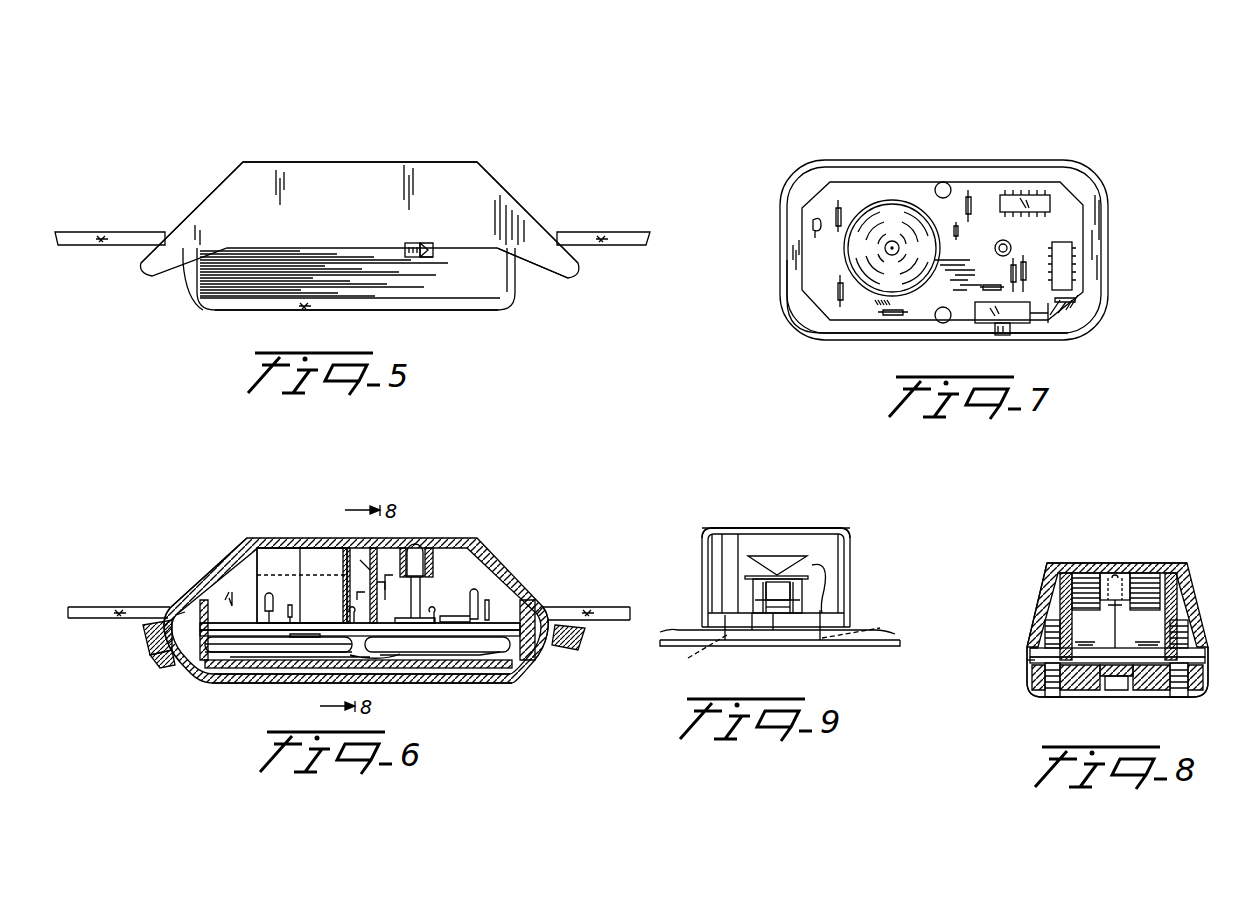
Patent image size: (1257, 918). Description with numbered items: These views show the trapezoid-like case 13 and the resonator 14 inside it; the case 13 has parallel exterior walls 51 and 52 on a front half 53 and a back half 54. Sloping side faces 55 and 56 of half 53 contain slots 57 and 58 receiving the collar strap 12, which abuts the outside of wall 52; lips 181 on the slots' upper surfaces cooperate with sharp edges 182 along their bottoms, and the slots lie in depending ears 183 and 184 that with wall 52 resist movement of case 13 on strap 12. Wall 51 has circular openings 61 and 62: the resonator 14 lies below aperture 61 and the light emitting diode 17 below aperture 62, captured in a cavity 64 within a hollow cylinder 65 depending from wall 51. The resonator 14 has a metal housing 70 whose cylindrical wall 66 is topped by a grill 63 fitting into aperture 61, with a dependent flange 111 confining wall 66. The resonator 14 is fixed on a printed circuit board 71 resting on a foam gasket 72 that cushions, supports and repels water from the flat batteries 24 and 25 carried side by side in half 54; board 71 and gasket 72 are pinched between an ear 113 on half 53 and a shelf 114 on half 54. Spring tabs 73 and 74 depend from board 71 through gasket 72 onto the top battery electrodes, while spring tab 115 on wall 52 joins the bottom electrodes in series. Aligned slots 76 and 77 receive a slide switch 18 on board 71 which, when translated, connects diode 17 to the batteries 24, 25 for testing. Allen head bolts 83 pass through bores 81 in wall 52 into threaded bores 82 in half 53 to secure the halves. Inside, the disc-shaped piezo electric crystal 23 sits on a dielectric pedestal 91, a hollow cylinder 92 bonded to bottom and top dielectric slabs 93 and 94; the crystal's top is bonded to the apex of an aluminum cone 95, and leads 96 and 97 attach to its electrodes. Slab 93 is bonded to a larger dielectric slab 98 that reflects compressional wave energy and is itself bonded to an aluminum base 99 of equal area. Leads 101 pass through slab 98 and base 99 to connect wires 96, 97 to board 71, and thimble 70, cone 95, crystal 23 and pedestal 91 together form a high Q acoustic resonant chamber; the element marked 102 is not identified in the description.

In FIG. 5, the collar strap 12 is at (640, 232).
In FIG. 6, the collar strap 12 is at (90, 612).
In FIG. 5, the case 13 is at (359, 195).
In FIG. 6, the case 13 is at (367, 594).
In FIG. 8, the case 13 is at (1117, 566).
In FIG. 7, the resonator 14 is at (962, 218).
In FIG. 6, the resonator 14 is at (291, 553).
In FIG. 9, the resonator 14 is at (753, 477).
In FIG. 7, the light emitting diode 17 is at (1000, 240).
In FIG. 6, the light emitting diode 17 is at (418, 560).
In FIG. 8, the light emitting diode 17 is at (1110, 582).
In FIG. 5, the slide switch 18 is at (405, 245).
In FIG. 7, the slide switch 18 is at (1012, 333).
In FIG. 9, the piezo electric crystal 23 is at (738, 580).
In FIG. 6, the battery 24 is at (250, 645).
In FIG. 6, the battery 25 is at (520, 664).
In FIG. 5, the exterior wall 51 is at (420, 162).
In FIG. 8, the exterior wall 51 is at (1182, 563).
In FIG. 5, the exterior wall 52 is at (485, 285).
In FIG. 7, the exterior wall 52 is at (1108, 237).
In FIG. 6, the exterior wall 52 is at (485, 662).
In FIG. 8, the exterior wall 52 is at (1095, 698).
In FIG. 5, the front half 53 is at (527, 197).
In FIG. 6, the front half 53 is at (189, 558).
In FIG. 8, the front half 53 is at (1025, 574).
In FIG. 5, the back half 54 is at (333, 341).
In FIG. 6, the back half 54 is at (384, 714).
In FIG. 8, the back half 54 is at (1087, 730).
In FIG. 5, the sloping side face 55 is at (210, 193).
In FIG. 5, the sloping side face 56 is at (535, 215).
In FIG. 6, the slot 57 is at (150, 630).
In FIG. 6, the slot 58 is at (578, 622).
In FIG. 6, the circular opening 61 is at (303, 538).
In FIG. 6, the circular opening 62 is at (412, 548).
In FIG. 7, the grill 63 is at (870, 205).
In FIG. 9, the grill 63 is at (825, 528).
In FIG. 6, the cavity 64 is at (435, 548).
In FIG. 6, the hollow cylinder 65 is at (395, 578).
In FIG. 8, the hollow cylinder 65 is at (1098, 588).
In FIG. 6, the cylindrical wall 66 is at (345, 555).
In FIG. 9, the cylindrical wall 66 is at (705, 606).
In FIG. 6, the thimble-like metal housing 70 is at (262, 598).
In FIG. 9, the thimble-like metal housing 70 is at (738, 573).
In FIG. 7, the printed circuit board 71 is at (810, 268).
In FIG. 6, the printed circuit board 71 is at (225, 631).
In FIG. 9, the printed circuit board 71 is at (690, 636).
In FIG. 8, the printed circuit board 71 is at (1205, 648).
In FIG. 7, the closed cell foam gasket 72 is at (800, 195).
In FIG. 6, the closed cell foam gasket 72 is at (300, 637).
In FIG. 9, the closed cell foam gasket 72 is at (875, 648).
In FIG. 8, the closed cell foam gasket 72 is at (1190, 660).
In FIG. 6, the terminal spring tab 73 is at (410, 655).
In FIG. 6, the terminal spring tab 74 is at (345, 640).
In FIG. 5, the slot 76 is at (433, 245).
In FIG. 5, the slot 77 is at (430, 258).
In FIG. 7, the slot 77 is at (1000, 335).
In FIG. 8, the circular bore 81 is at (1038, 682).
In FIG. 8, the threaded bore 82 is at (1042, 638).
In FIG. 8, the Allen head bolt 83 is at (1182, 695).
In FIG. 9, the dielectric pedestal 91 is at (845, 602).
In FIG. 9, the hollow cylinder 92 is at (740, 600).
In FIG. 9, the bottom dielectric slab 93 is at (783, 609).
In FIG. 9, the top dielectric slab 94 is at (805, 590).
In FIG. 9, the aluminum cone 95 is at (777, 560).
In FIG. 9, the lead 96 is at (768, 592).
In FIG. 9, the lead 97 is at (825, 568).
In FIG. 9, the circular dielectric slab 98 is at (773, 615).
In FIG. 9, the circular aluminum base 99 is at (752, 622).
In FIG. 9, the electric lead 101 is at (900, 628).
In FIG. 9, the housing top wall 102 is at (845, 530).
In FIG. 6, the circular flange 111 is at (365, 555).
In FIG. 8, the ear 113 is at (1030, 643).
In FIG. 8, the shelf 114 is at (1030, 665).
In FIG. 6, the metal spring tab 115 is at (395, 657).
In FIG. 6, the lip 181 is at (180, 605).
In FIG. 6, the sharp edge 182 is at (176, 648).
In FIG. 6, the ear 183 is at (150, 654).
In FIG. 6, the ear 184 is at (575, 650).